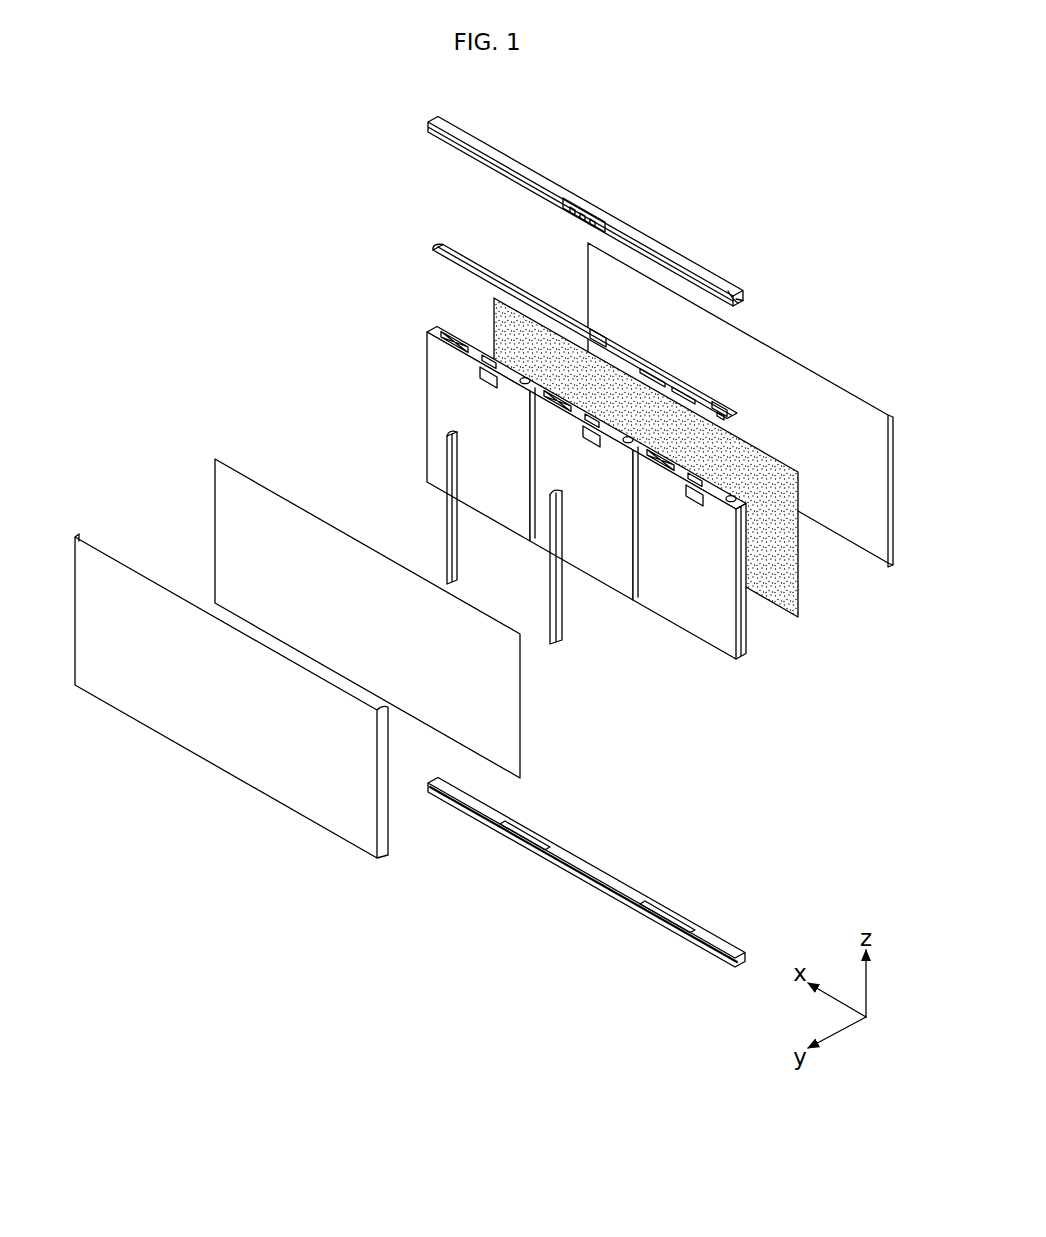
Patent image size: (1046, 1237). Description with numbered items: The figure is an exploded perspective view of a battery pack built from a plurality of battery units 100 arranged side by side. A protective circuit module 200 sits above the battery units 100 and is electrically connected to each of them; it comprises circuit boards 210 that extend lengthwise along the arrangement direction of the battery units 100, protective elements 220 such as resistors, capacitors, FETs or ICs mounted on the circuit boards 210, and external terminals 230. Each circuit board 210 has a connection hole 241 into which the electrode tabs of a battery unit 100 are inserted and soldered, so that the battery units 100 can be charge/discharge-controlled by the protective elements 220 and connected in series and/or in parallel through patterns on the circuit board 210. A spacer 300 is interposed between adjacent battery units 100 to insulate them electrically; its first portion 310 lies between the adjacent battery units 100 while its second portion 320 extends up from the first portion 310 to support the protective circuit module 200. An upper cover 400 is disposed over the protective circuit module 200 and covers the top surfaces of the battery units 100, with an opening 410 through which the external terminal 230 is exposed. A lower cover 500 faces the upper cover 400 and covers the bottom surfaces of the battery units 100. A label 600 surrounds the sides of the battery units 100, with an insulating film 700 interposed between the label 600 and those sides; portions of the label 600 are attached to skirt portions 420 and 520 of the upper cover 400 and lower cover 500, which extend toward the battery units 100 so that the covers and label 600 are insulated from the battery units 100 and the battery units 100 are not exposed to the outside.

The battery unit 100 is at (422, 357).
The protective circuit module 200 is at (622, 347).
The circuit board 210 is at (727, 396).
The protective element 220 is at (677, 377).
The external terminal 230 is at (598, 333).
The connection hole 241 is at (728, 415).
The spacer 300 is at (468, 559).
The first portion 310 is at (453, 530).
The second portion 320 is at (368, 495).
The upper cover 400 is at (596, 212).
The opening 410 is at (600, 215).
The skirt portion 420 is at (693, 290).
The lower cover 500 is at (605, 873).
The skirt portion 520 is at (703, 927).
The label 600 is at (833, 385).
The insulating film 700 is at (797, 577).